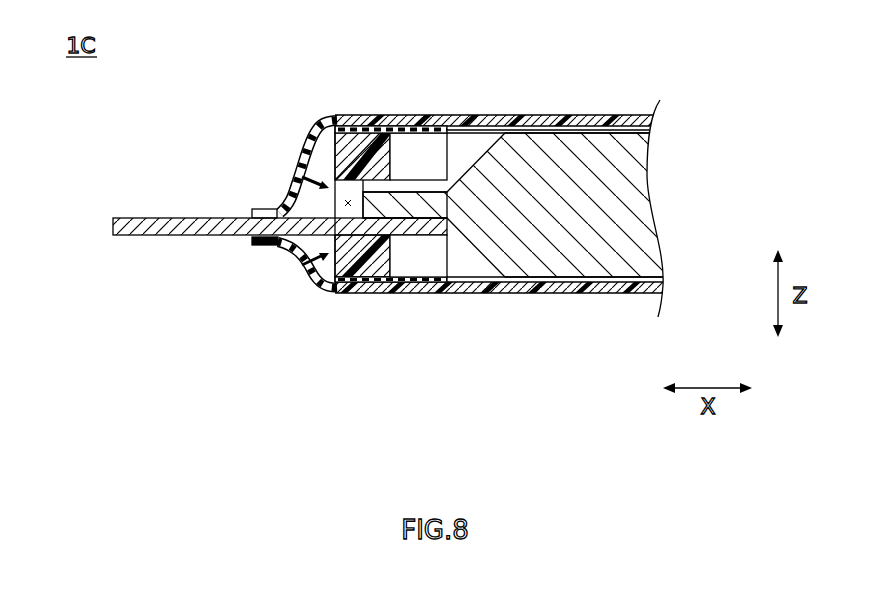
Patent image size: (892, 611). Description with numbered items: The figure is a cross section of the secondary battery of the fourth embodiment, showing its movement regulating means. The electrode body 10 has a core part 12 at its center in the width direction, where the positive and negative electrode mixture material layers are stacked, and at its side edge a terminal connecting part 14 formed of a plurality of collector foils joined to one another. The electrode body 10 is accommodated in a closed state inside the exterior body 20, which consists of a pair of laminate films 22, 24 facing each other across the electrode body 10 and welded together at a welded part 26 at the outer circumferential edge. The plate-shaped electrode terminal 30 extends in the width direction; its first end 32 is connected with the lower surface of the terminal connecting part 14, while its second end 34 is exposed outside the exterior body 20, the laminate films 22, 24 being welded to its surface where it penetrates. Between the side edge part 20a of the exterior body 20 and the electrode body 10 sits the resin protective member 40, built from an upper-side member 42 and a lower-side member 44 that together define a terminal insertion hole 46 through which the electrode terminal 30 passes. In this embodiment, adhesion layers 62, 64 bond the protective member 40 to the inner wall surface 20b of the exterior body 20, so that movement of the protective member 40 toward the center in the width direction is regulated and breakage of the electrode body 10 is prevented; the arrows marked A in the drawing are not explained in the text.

The electrode body 10 is at (445, 197).
The core part 12 is at (580, 160).
The terminal connecting part 14 is at (362, 115).
The exterior body 20 is at (444, 197).
The side edge part 20a is at (296, 175).
The inner wall surface 20b is at (462, 128).
The laminate film 22 is at (543, 120).
The laminate film 24 is at (577, 295).
The welded part 26 is at (270, 208).
The electrode terminal 30 is at (264, 181).
The first end 32 is at (418, 170).
The second end 34 is at (180, 217).
The protective member 40 is at (426, 267).
The upper-side member 42 is at (472, 112).
The lower-side member 44 is at (438, 273).
The terminal insertion hole 46 is at (352, 160).
The adhesion layer 62 is at (410, 127).
The adhesion layer 64 is at (413, 280).
The gas flow direction A is at (317, 176).